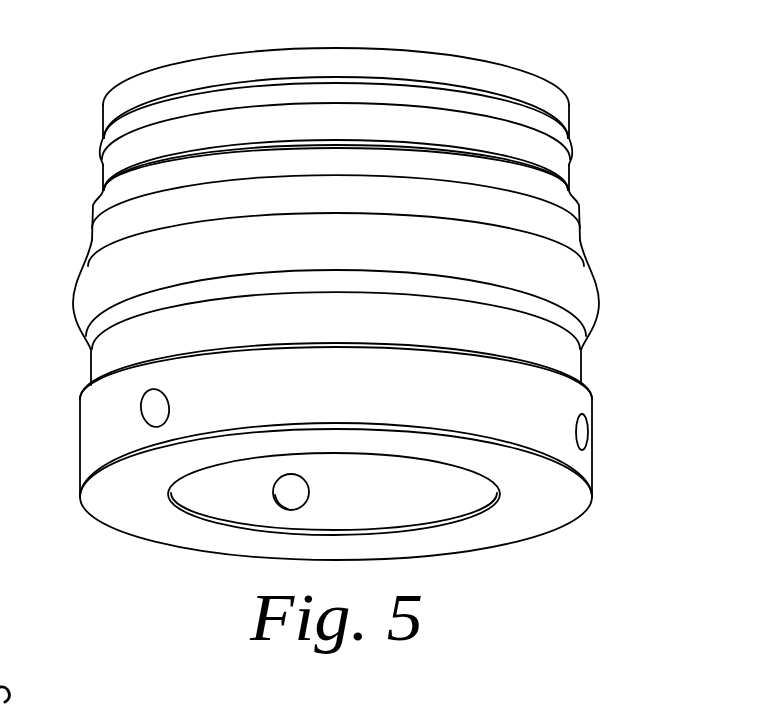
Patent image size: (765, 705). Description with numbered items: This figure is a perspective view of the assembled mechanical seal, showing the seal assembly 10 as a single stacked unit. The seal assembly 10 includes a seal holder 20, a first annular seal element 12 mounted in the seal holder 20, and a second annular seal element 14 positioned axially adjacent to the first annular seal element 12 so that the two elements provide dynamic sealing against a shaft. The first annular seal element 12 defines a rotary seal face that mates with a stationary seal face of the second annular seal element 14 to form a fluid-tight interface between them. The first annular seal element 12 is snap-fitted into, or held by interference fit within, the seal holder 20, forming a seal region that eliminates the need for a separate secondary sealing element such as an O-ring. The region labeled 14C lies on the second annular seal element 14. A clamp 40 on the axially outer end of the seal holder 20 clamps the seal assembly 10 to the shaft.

The seal assembly 10 is at (630, 201).
The first annular seal element 12 is at (465, 155).
The second annular seal element 14 is at (554, 93).
The annular lip 14C is at (575, 150).
The seal holder 20 is at (603, 298).
The clamp 40 is at (590, 403).